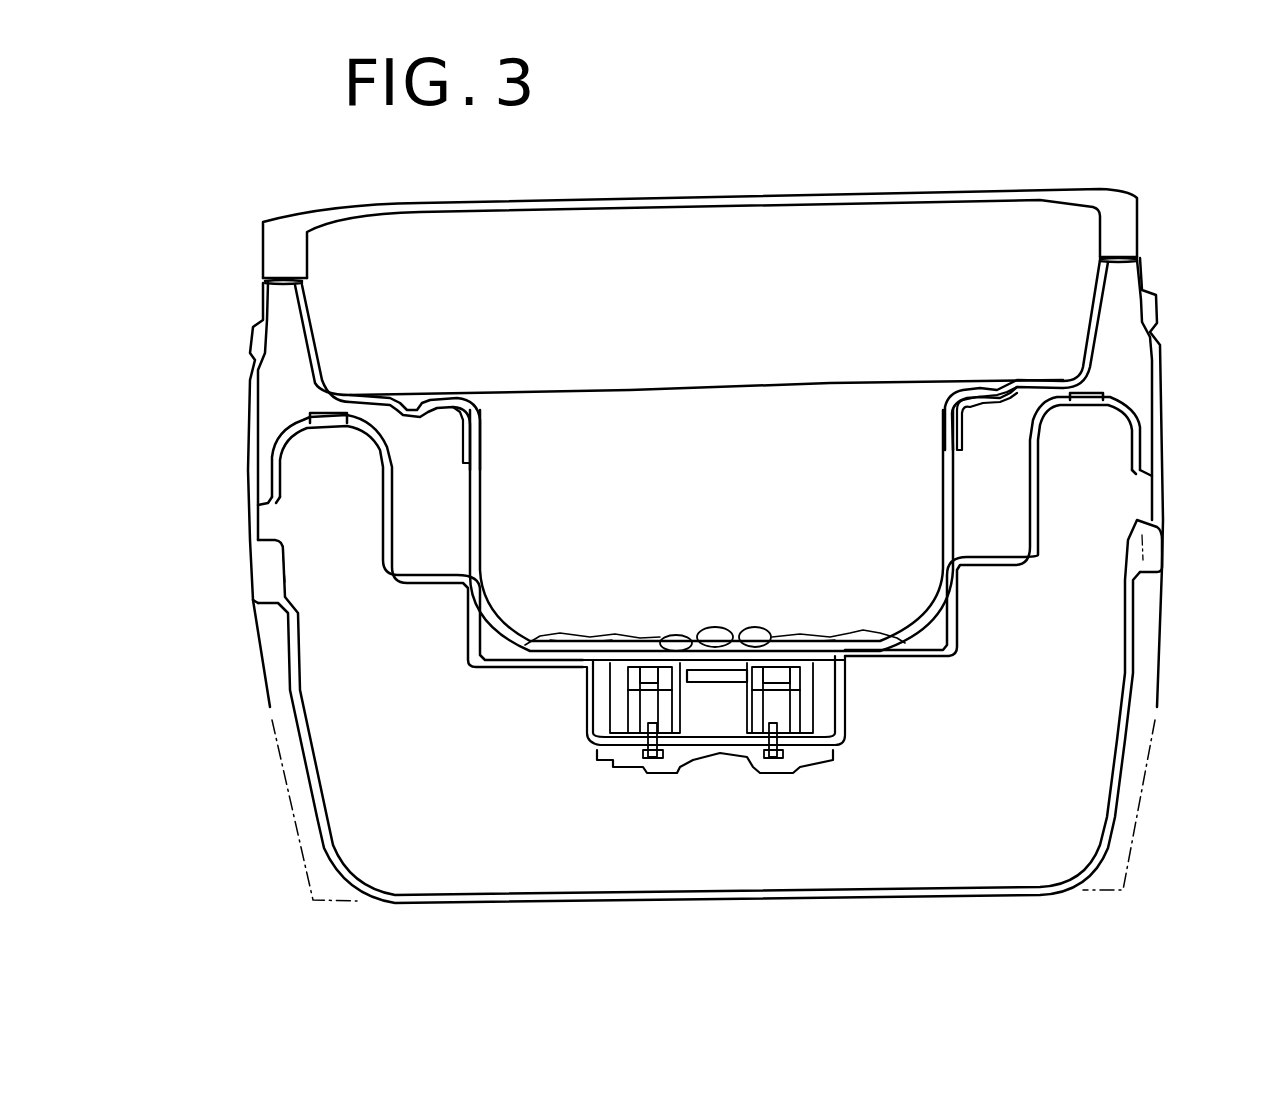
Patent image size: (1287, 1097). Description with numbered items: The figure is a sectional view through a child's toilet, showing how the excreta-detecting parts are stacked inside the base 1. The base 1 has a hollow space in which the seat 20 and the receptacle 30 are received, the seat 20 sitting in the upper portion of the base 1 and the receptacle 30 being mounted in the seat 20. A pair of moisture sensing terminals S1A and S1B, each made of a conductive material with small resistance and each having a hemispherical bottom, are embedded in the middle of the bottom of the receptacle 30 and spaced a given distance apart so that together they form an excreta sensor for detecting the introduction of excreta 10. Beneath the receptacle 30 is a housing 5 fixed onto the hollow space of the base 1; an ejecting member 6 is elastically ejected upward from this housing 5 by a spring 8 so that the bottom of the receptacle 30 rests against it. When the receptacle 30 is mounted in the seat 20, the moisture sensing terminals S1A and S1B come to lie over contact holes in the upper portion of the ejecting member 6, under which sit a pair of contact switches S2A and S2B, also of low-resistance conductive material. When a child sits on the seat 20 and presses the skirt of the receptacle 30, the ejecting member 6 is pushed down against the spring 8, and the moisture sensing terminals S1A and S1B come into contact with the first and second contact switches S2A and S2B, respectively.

The base 1 is at (1123, 760).
The seat 20 is at (952, 190).
The receptacle 30 is at (943, 438).
The excreta 10 is at (627, 637).
The ejecting member 6 is at (567, 663).
The housing 5 is at (583, 737).
The spring 8 is at (627, 760).
The moisture sensing terminal S1A is at (690, 637).
The moisture sensing terminal S1B is at (740, 637).
The first contact switch S2A is at (693, 693).
The second contact switch S2B is at (733, 700).